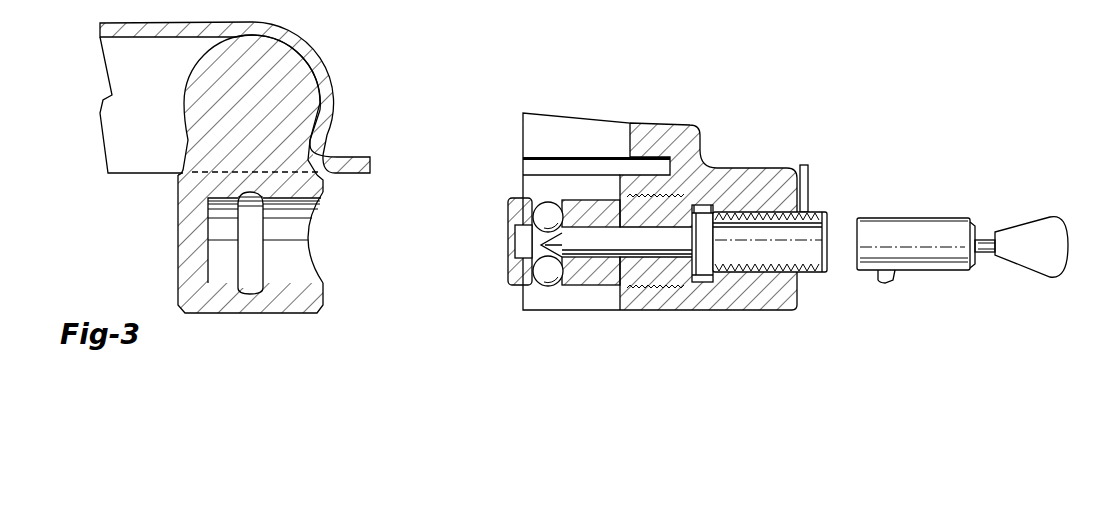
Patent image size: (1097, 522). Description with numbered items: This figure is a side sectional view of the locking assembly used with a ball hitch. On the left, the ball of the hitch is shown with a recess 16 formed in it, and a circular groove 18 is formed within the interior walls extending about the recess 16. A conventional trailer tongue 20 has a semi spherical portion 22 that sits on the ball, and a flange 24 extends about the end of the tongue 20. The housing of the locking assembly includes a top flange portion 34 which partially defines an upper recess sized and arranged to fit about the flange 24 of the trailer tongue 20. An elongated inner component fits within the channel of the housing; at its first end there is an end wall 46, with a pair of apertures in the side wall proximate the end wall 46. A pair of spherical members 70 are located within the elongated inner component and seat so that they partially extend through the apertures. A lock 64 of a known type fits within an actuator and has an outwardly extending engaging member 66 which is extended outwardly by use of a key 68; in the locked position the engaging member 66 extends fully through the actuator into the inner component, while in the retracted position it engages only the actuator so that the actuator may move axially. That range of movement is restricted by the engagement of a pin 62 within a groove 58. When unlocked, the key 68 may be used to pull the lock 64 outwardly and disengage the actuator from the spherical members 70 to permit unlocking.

The recess 16 is at (311, 241).
The circular groove 18 is at (253, 283).
The trailer tongue 20 is at (303, 32).
The semi spherical portion 22 is at (320, 62).
The flange 24 is at (358, 160).
The top flange portion 34 is at (643, 123).
The end wall 46 is at (510, 220).
The groove 58 is at (773, 268).
The pin 62 is at (753, 268).
The lock 64 is at (947, 218).
The engaging member 66 is at (888, 282).
The key 68 is at (1048, 230).
The spherical members 70 is at (547, 207).